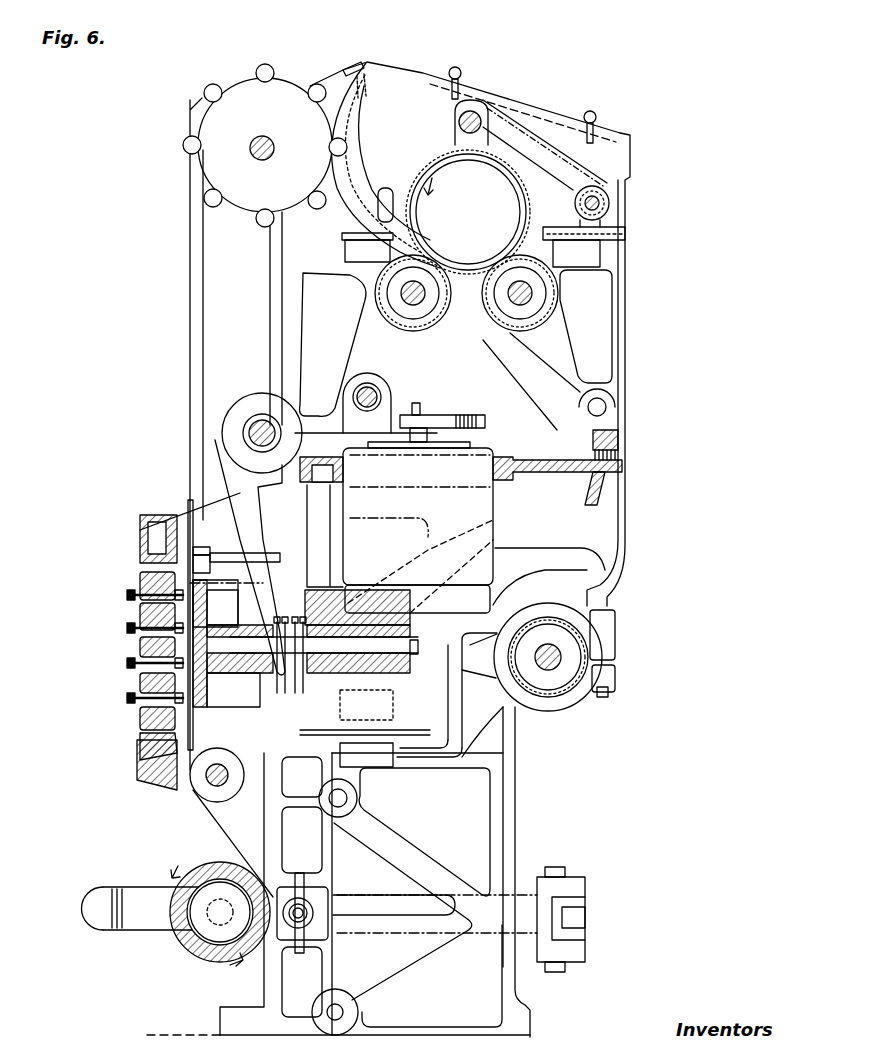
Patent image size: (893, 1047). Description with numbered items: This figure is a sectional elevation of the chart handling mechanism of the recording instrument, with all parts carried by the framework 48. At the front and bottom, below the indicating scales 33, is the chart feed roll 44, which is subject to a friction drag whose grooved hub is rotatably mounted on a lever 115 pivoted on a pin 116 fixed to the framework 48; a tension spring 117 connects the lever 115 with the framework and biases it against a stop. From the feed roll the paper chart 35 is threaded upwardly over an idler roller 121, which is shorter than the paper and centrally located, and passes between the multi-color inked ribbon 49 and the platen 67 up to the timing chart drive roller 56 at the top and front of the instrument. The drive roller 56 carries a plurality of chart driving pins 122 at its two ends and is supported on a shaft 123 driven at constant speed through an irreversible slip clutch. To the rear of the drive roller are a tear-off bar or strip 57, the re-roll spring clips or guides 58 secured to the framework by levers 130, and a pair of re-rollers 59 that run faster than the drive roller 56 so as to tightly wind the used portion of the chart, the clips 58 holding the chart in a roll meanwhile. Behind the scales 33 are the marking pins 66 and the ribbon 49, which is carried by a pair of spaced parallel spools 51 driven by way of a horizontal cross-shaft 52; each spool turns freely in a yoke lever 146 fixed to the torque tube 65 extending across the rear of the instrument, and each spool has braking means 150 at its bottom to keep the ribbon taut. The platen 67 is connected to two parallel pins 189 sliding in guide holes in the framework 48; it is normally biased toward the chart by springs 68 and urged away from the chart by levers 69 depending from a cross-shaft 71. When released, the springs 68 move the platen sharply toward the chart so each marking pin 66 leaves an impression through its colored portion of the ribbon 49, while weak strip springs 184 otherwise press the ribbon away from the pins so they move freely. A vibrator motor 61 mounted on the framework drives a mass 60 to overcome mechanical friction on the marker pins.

The chart driving pins 122 is at (212, 88).
The chart drive roller shaft 123 is at (255, 155).
The timing chart drive roller 56 is at (200, 133).
The paper chart 35 is at (189, 418).
The re-roll spring clips or guides 58 is at (438, 163).
The tear-off bar or strip 57 is at (385, 192).
The levers 130 is at (538, 130).
The re-rollers 59 is at (510, 306).
The horizontal cross-shaft 52 is at (372, 385).
The mass 60 is at (454, 418).
The vibrator motor 61 is at (496, 448).
The cross-shaft 71 is at (250, 420).
The levers 69 is at (238, 526).
The multi-color inked ribbon 49 is at (140, 583).
The marking pins 66 is at (138, 610).
The weak strip springs 184 is at (135, 628).
The platen 67 is at (205, 697).
The springs 68 is at (280, 688).
The indicating scales 33 is at (140, 719).
The framework 48 is at (408, 690).
The parallel pins 189 is at (417, 664).
The spools 51 is at (393, 735).
The yoke lever 146 is at (436, 775).
The braking means 150 is at (393, 762).
The torque tube 65 is at (575, 700).
The pin 116 is at (565, 870).
The tension spring 117 is at (330, 890).
The lever 115 is at (133, 890).
The chart feed roll 44 is at (185, 940).
The idler roller 121 is at (205, 797).